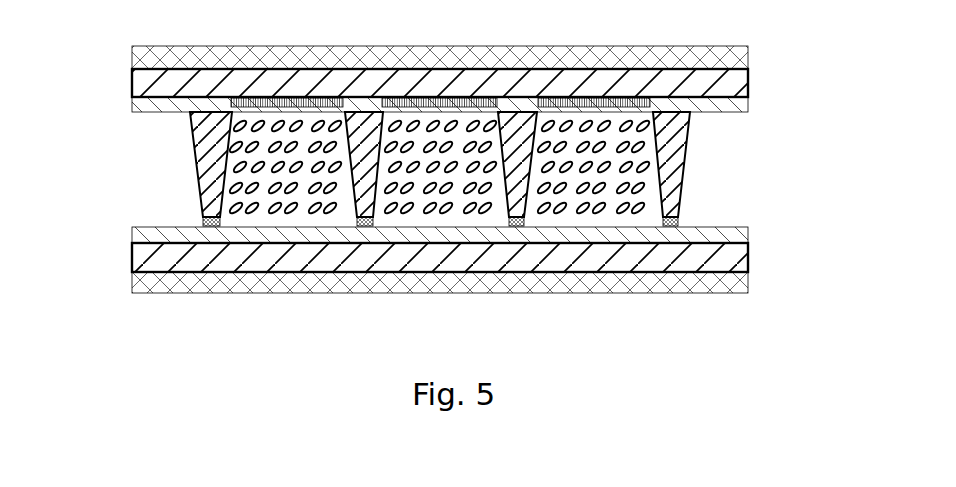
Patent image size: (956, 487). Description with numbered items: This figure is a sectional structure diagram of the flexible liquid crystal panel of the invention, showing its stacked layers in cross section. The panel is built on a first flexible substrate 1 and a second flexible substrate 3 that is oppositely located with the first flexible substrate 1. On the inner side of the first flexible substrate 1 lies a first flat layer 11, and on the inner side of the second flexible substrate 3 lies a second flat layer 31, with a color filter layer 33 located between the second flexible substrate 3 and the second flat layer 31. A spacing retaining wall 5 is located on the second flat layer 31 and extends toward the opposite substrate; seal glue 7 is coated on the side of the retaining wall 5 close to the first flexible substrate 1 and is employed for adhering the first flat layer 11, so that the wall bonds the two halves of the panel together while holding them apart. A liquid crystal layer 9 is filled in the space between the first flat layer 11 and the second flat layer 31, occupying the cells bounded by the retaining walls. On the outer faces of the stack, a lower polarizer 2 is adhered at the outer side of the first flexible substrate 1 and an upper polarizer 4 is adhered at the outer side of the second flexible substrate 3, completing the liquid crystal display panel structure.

The first flexible substrate 1 is at (722, 258).
The first flat layer 11 is at (698, 237).
The lower polarizer 2 is at (722, 290).
The second flexible substrate 3 is at (727, 86).
The second flat layer 31 is at (723, 107).
The color filter layer 33 is at (155, 101).
The upper polarizer 4 is at (707, 60).
The spacing retaining wall 5 is at (213, 152).
The seal glue 7 is at (205, 220).
The liquid crystal layer 9 is at (597, 166).